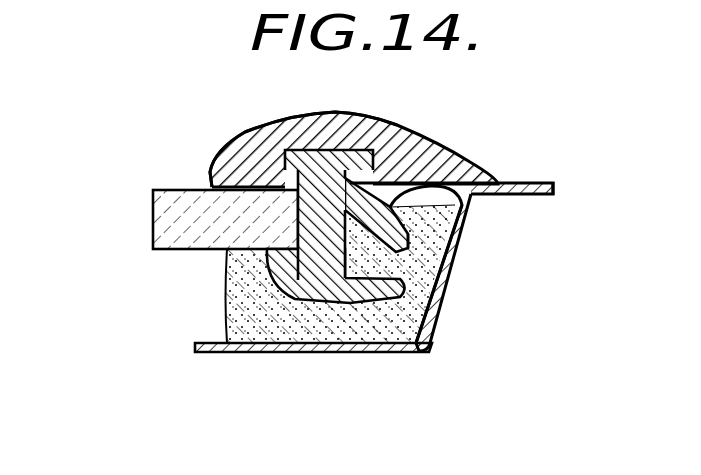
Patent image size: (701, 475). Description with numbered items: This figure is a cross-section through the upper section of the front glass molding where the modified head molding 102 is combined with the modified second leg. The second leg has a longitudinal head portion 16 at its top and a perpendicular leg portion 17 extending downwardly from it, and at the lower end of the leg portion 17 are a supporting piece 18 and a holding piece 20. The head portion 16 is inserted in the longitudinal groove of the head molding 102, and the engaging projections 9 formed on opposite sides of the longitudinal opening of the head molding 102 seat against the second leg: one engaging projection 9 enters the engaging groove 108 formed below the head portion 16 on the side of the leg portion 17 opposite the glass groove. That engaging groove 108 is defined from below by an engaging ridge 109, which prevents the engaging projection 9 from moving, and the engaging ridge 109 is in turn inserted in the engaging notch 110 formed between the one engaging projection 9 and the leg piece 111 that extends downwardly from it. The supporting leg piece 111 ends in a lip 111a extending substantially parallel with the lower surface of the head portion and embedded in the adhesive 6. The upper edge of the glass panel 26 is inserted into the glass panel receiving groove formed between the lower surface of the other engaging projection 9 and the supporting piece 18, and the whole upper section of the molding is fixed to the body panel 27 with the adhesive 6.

The adhesive 6 is at (230, 302).
The engaging projection 9 is at (283, 170).
The head portion 16 is at (300, 118).
The leg portion 17 is at (328, 352).
The supporting piece 18 is at (268, 330).
The holding piece 20 is at (385, 330).
The glass panel 26 is at (153, 217).
The body panel 27 is at (543, 197).
The head molding 102 is at (353, 116).
The engaging groove 108 is at (392, 118).
The engaging ridge 109 is at (463, 208).
The engaging notch 110 is at (500, 173).
The leg piece 111 is at (452, 228).
The lip 111a is at (420, 262).